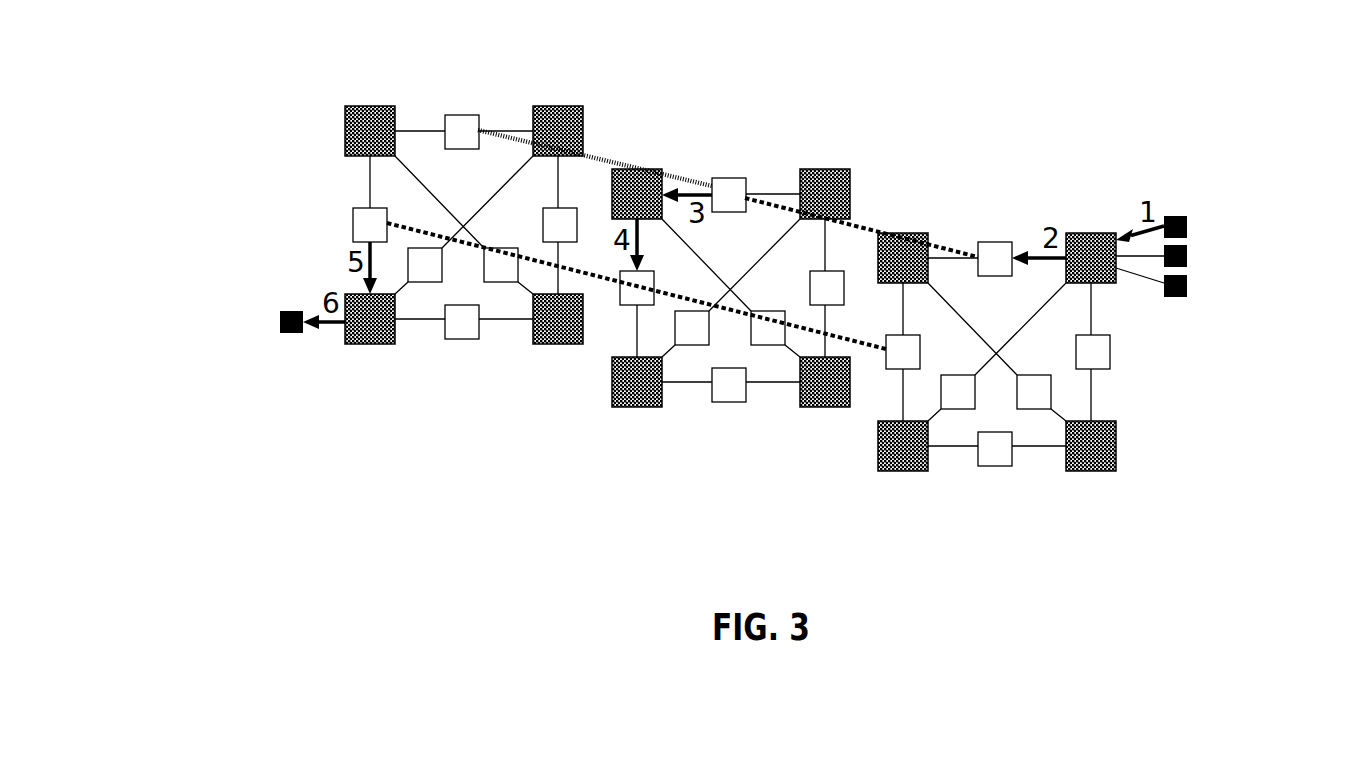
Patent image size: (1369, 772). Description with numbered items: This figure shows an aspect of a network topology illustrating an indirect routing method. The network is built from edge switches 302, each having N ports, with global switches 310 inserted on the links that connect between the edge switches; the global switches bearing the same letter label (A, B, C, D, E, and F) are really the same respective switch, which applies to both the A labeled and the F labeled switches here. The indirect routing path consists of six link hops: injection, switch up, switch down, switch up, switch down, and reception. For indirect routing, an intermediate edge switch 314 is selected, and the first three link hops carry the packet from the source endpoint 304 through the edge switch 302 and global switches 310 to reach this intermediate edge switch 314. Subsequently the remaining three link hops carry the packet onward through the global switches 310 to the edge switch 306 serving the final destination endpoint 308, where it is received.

The edge switch 302 is at (793, 247).
The source endpoint 304 is at (1187, 282).
The edge switch 306 is at (380, 343).
The destination endpoint 308 is at (290, 333).
The global switch 310 is at (466, 115).
The intermediate edge switch 314 is at (632, 190).